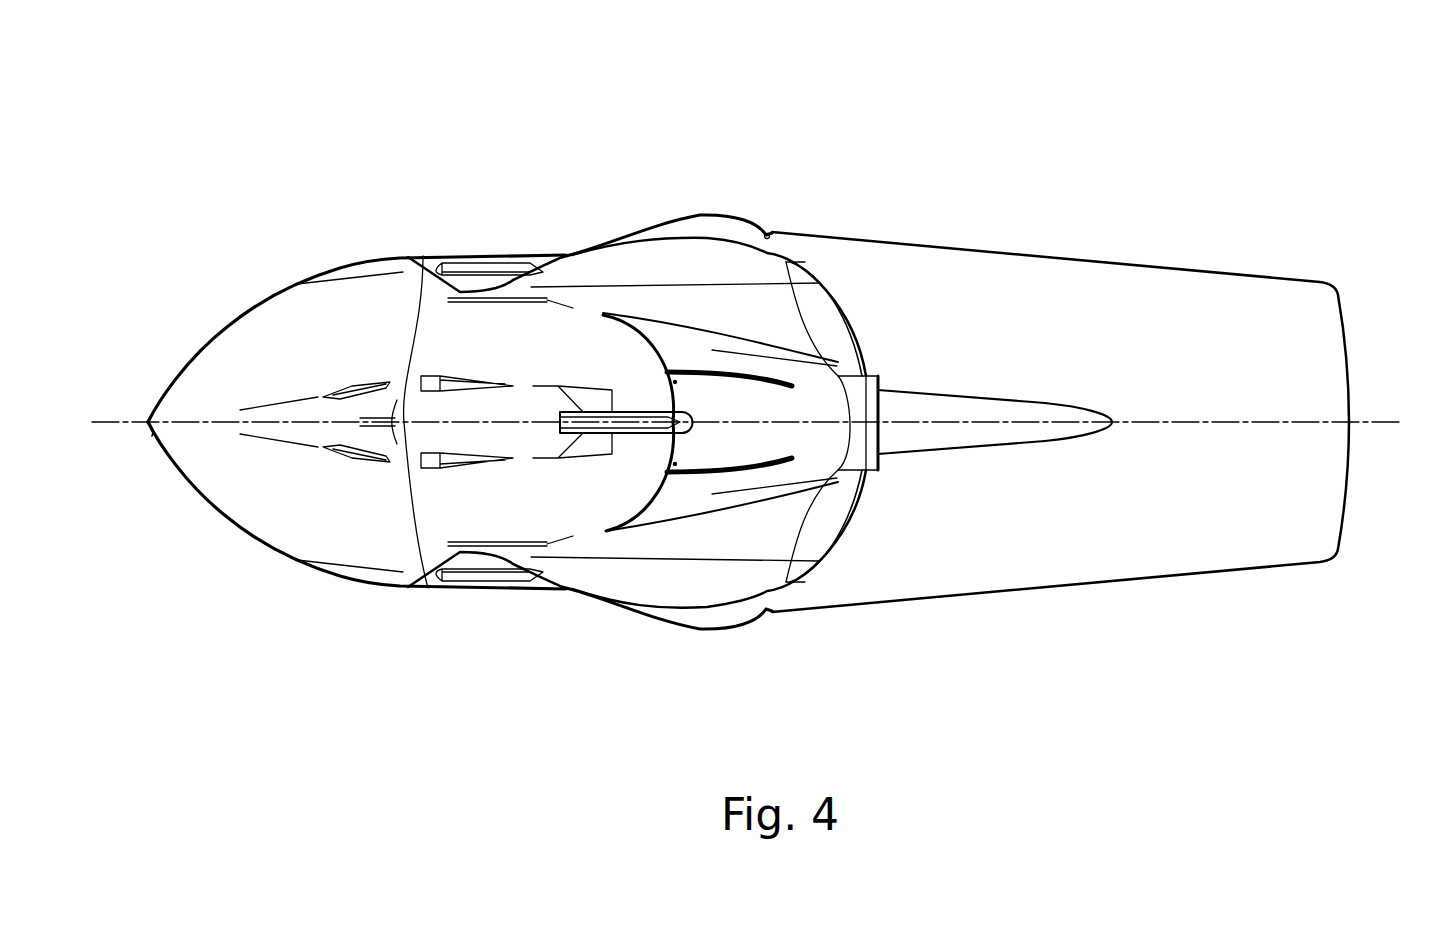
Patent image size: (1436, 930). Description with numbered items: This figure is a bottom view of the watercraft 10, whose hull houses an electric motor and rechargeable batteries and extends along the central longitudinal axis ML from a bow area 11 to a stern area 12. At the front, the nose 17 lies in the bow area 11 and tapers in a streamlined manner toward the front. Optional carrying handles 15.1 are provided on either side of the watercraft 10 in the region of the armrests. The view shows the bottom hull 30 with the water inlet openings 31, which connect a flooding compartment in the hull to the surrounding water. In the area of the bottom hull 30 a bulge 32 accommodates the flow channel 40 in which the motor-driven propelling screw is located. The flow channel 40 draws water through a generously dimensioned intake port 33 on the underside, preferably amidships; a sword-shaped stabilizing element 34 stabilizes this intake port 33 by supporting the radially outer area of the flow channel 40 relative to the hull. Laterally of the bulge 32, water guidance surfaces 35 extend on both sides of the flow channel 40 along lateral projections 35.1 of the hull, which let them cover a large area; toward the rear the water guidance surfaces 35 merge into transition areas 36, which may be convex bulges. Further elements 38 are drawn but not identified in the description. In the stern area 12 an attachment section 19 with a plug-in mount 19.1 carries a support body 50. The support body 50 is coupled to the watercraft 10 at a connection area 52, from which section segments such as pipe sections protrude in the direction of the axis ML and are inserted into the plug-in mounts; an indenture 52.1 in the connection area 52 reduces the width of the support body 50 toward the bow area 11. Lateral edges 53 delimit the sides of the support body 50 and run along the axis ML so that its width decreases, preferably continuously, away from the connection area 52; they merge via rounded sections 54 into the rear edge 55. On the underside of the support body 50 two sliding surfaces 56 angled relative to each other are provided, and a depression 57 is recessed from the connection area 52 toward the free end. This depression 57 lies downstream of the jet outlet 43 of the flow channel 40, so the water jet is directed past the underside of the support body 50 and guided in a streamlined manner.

The central longitudinal axis ML is at (110, 421).
The watercraft 10 is at (627, 192).
The bow area 11 is at (212, 390).
The stern area 12 is at (770, 247).
The carrying handles 15.1 is at (476, 262).
The nose 17 is at (152, 436).
The attachment section 19 is at (807, 540).
The plug-in mount 19.1 is at (856, 541).
The bottom hull 30 is at (352, 296).
The water inlet openings 31 is at (432, 467).
The bulge 32 is at (822, 350).
The intake port 33 is at (608, 335).
The stabilizing element 34 is at (622, 423).
The water guidance surfaces 35 is at (743, 288).
The lateral projections 35.1 is at (672, 258).
The transition areas 36 is at (803, 295).
The sealing strip 38 is at (682, 355).
The flow channel 40 is at (864, 365).
The jet outlet 43 is at (892, 447).
The support body 50 is at (1222, 308).
The connection area 52 is at (895, 397).
The indenture 52.1 is at (768, 236).
The lateral edges 53 is at (1158, 266).
The rounded section 54 is at (1334, 288).
The rear edge 55 is at (1355, 402).
The sliding surfaces 56 is at (1210, 435).
The depression 57 is at (1012, 417).